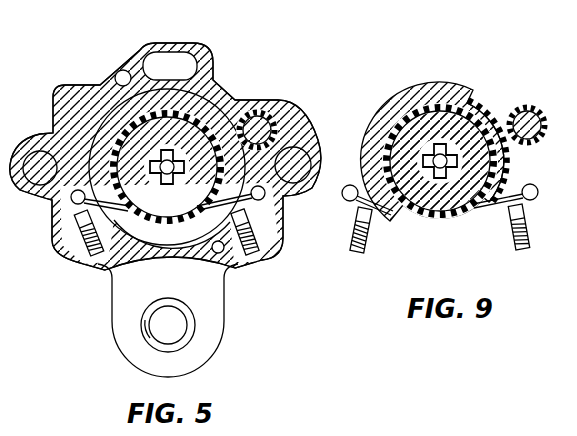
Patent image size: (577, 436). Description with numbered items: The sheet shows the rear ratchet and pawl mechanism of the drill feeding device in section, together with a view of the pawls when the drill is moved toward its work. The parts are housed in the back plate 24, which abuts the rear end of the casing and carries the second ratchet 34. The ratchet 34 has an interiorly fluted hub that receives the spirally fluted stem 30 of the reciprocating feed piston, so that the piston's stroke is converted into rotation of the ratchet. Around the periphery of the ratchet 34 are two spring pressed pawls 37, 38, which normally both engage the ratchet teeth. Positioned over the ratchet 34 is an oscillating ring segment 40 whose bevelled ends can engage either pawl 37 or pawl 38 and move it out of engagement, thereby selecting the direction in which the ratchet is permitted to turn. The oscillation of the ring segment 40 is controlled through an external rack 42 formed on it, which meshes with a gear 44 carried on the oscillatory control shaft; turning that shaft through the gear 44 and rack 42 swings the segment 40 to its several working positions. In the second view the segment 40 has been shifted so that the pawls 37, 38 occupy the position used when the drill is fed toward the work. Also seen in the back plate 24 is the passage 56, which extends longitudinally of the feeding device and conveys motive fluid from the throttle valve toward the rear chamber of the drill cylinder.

In FIG. 5, the back plate 24 is at (112, 302).
In FIG. 5, the fluted stem 30 is at (228, 258).
In FIG. 9, the fluted stem 30 is at (436, 217).
In FIG. 5, the second ratchet 34 is at (100, 87).
In FIG. 9, the second ratchet 34 is at (410, 120).
In FIG. 5, the spring pressed pawl 37 is at (82, 217).
In FIG. 9, the spring pressed pawl 37 is at (388, 215).
In FIG. 5, the spring pressed pawl 38 is at (270, 218).
In FIG. 9, the spring pressed pawl 38 is at (498, 217).
In FIG. 5, the ring segment 40 is at (183, 102).
In FIG. 9, the ring segment 40 is at (437, 70).
In FIG. 5, the external rack 42 is at (233, 110).
In FIG. 9, the external rack 42 is at (495, 68).
In FIG. 5, the gear 44 is at (270, 120).
In FIG. 9, the gear 44 is at (533, 88).
In FIG. 5, the passage 56 is at (175, 63).